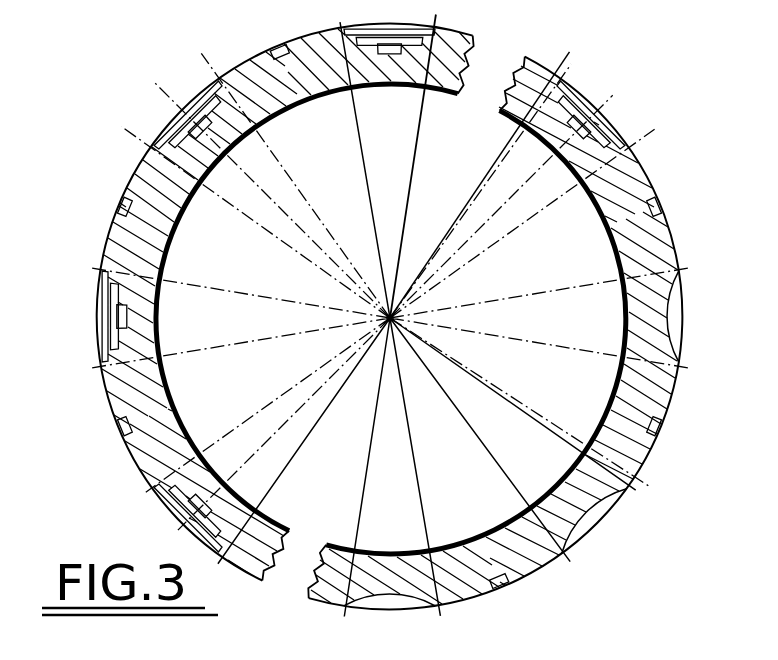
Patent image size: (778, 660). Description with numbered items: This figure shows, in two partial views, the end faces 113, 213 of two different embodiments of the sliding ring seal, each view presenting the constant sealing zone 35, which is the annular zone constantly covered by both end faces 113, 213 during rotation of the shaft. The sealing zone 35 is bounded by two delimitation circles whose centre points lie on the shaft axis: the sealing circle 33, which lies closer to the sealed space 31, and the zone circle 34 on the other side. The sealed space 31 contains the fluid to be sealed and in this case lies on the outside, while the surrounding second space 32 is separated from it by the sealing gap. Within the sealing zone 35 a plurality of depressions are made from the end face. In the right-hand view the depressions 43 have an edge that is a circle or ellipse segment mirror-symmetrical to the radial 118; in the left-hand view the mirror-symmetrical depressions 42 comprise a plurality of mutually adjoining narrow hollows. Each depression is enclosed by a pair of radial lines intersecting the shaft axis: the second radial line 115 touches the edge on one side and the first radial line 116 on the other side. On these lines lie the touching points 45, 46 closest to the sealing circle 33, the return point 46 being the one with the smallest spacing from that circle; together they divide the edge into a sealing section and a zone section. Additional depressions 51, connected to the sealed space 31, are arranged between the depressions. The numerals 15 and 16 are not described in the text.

The sealed space 31 is at (567, 46).
The second space 32 is at (580, 407).
The sealing circle 33 is at (128, 182).
The zone circle 34 is at (187, 207).
The sealing zone 35 is at (526, 550).
The depression 42 is at (197, 123).
The depression 43 is at (600, 133).
The touching point 45 is at (353, 27).
The return point 46 is at (353, 27).
The additional depression 51 is at (265, 44).
The end face 113 is at (551, 474).
The second radial line 115 is at (350, 107).
The first radial line 116 is at (427, 107).
The radial 118 is at (153, 88).
The end face 213 is at (551, 474).
The ring part 15 is at (480, 159).
The ring part 16 is at (480, 159).